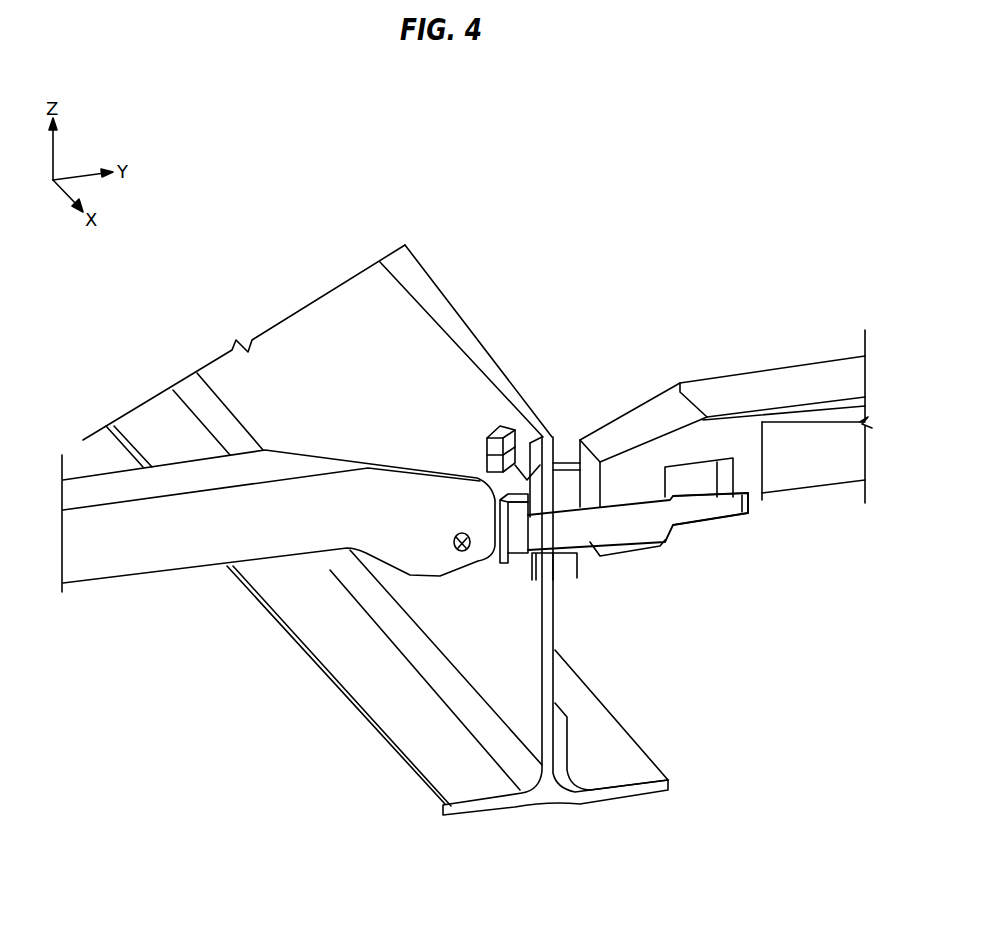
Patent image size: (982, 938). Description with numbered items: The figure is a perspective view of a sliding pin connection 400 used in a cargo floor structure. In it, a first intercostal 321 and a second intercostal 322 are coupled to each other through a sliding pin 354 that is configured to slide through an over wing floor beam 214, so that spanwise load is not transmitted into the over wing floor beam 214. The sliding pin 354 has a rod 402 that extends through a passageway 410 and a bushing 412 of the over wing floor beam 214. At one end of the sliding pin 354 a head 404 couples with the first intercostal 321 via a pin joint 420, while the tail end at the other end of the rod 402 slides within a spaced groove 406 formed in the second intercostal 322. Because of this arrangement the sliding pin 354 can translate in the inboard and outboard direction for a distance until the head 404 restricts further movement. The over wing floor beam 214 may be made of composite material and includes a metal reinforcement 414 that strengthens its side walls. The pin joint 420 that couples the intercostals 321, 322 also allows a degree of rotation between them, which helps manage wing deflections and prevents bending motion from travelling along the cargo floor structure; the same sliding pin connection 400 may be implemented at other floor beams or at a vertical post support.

The sliding pin connection 400 is at (628, 190).
The over wing floor beam 214 is at (560, 637).
The first intercostal 321 is at (180, 565).
The second intercostal 322 is at (818, 468).
The sliding pin 354 is at (620, 525).
The rod 402 is at (705, 508).
The head 404 is at (510, 566).
The spaced groove 406 is at (758, 524).
The passageway 410 is at (547, 565).
The bushing 412 is at (580, 563).
The metal reinforcement 414 is at (482, 460).
The pin joint 420 is at (462, 562).